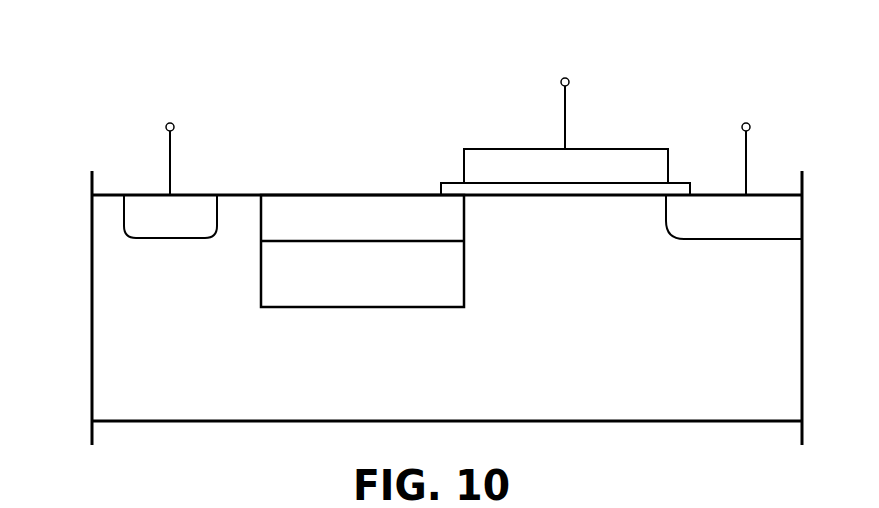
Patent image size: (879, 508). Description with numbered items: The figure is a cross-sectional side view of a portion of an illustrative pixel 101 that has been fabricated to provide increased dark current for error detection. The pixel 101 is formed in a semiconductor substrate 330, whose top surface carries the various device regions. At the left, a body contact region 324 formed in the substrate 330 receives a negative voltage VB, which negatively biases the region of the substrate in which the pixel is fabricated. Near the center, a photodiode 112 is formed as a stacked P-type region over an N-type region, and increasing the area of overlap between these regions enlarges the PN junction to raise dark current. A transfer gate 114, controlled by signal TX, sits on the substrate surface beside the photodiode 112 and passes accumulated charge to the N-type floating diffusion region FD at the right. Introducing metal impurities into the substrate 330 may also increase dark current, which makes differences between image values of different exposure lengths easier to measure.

The pixel 101 is at (110, 41).
The semiconductor substrate 330 is at (645, 397).
The body contact region 324 is at (170, 227).
The photodiode 112 is at (463, 334).
The transfer gate 114 is at (491, 126).